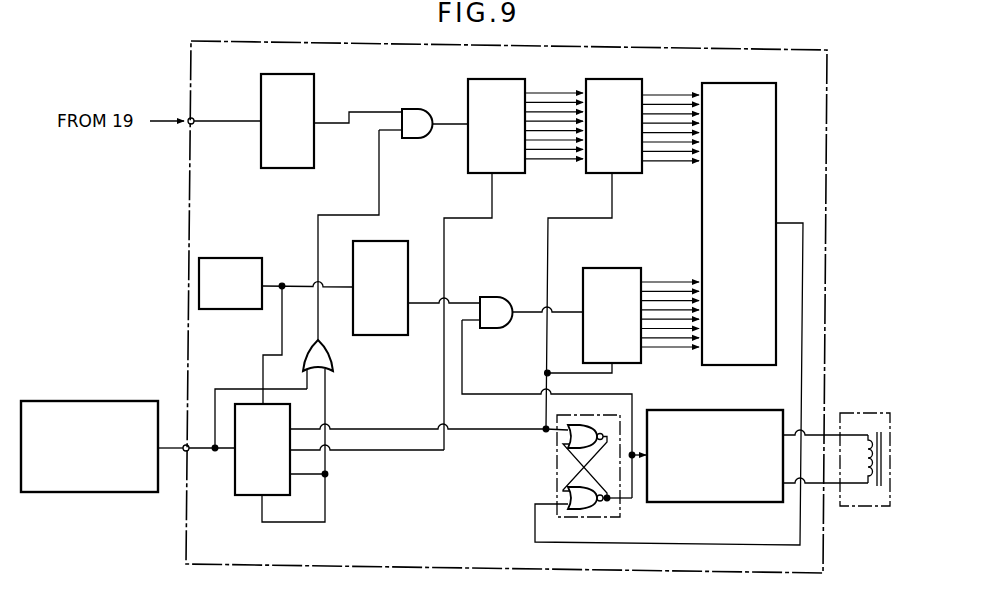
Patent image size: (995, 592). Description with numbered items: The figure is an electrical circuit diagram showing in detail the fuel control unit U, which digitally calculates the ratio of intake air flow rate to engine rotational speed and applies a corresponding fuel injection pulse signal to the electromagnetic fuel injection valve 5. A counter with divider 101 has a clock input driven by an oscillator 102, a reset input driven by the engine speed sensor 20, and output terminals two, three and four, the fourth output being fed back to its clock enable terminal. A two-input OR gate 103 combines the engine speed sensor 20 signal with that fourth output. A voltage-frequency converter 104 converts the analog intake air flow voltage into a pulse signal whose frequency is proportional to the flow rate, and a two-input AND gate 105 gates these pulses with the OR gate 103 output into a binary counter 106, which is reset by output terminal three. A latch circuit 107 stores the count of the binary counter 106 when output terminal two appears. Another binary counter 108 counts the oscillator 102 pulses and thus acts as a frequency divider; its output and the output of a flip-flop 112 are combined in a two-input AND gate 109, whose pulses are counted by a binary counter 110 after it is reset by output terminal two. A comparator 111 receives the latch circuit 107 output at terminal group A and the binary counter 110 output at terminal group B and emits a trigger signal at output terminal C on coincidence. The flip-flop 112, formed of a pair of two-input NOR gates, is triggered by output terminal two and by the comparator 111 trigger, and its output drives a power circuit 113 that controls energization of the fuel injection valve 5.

The electromagnetic fuel injection valve 5 is at (876, 413).
The engine speed sensor 20 is at (120, 401).
The counter with divider 101 is at (250, 495).
The oscillator 102 is at (245, 258).
The two-input OR gate 103 is at (330, 358).
The voltage-frequency (V-F) converter 104 is at (286, 74).
The two-input AND gate 105 is at (427, 109).
The binary counter 106 is at (486, 79).
The latch circuit 107 is at (602, 79).
The binary counter 108 is at (393, 241).
The two-input AND gate 109 is at (503, 297).
The binary counter 110 is at (625, 268).
The comparator 111 is at (745, 83).
The flip-flop 112 is at (557, 440).
The power circuit 113 is at (727, 410).
The fuel control unit U is at (680, 50).